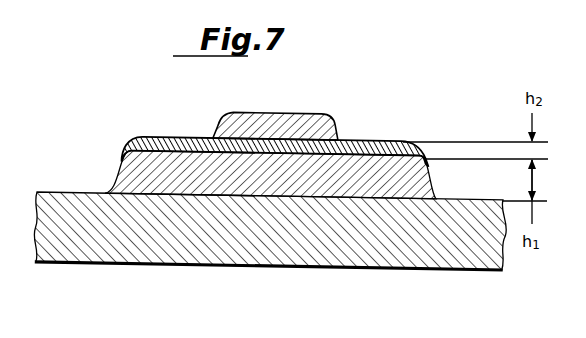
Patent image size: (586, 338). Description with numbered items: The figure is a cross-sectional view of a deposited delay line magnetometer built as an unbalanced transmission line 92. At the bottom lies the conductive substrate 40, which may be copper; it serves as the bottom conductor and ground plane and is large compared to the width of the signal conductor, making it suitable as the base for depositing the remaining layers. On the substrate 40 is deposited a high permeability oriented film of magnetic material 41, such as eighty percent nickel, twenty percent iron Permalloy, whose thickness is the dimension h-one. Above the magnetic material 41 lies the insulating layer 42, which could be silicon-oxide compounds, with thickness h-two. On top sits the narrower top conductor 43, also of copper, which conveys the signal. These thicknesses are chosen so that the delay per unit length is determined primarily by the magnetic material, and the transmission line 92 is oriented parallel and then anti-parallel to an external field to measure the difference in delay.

The conductive substrate 40 is at (66, 255).
The high permeability magnetic material 41 is at (127, 178).
The insulating layer 42 is at (163, 144).
The top conductor 43 is at (272, 125).
The transmission line 92 is at (269, 138).